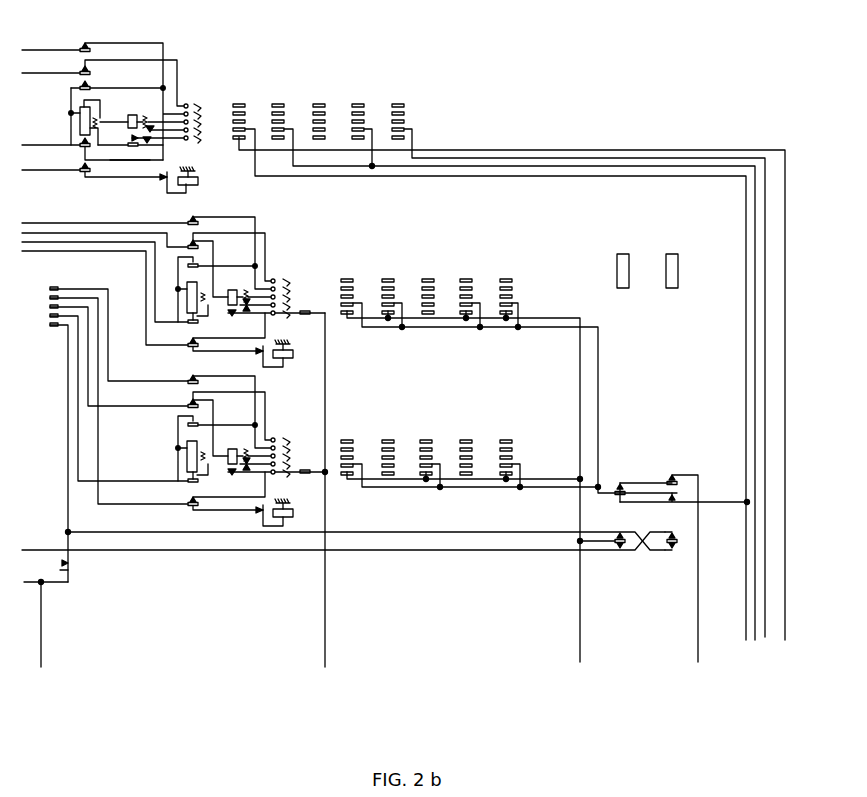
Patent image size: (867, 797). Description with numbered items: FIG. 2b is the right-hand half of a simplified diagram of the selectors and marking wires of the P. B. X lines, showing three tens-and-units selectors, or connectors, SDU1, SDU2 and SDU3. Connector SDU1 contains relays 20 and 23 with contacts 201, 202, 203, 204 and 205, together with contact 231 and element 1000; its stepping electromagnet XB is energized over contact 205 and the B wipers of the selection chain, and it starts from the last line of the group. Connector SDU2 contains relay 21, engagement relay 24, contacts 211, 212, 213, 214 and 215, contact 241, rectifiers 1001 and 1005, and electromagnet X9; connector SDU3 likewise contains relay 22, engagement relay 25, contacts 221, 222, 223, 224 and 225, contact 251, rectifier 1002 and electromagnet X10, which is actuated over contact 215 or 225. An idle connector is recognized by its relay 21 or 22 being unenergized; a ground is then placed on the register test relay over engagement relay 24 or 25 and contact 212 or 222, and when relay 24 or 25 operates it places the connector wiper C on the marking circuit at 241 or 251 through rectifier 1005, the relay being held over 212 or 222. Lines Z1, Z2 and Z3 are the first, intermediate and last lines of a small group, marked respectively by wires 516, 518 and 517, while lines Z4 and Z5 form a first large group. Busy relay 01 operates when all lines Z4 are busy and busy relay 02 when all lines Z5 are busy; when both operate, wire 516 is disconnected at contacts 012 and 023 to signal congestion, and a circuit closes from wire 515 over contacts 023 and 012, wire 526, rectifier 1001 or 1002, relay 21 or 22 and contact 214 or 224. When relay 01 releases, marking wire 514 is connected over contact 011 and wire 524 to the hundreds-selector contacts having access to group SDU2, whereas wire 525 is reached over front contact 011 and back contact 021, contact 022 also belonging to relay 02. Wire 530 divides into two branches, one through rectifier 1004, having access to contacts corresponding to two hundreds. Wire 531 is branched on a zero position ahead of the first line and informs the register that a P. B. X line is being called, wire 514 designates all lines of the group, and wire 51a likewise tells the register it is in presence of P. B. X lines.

The tens and units selector SDU1 is at (170, 80).
The tens and units selector SDU2 is at (267, 264).
The tens and units selector SDU3 is at (264, 423).
The relay 20 is at (73, 116).
The relay 21 is at (184, 289).
The relay 22 is at (180, 448).
The relay coil 23 is at (142, 113).
The engagement relay 24 is at (249, 288).
The engagement relay 25 is at (248, 447).
The contact 201 is at (103, 98).
The contact 202 is at (103, 82).
The contact 203 is at (102, 89).
The contact 204 is at (92, 152).
The contact 205 is at (94, 175).
The contact 211 is at (146, 248).
The contact 212 is at (146, 265).
The contact 213 is at (199, 264).
The contact 214 is at (110, 289).
The contact 215 is at (143, 306).
The contact 221 is at (160, 367).
The contact 222 is at (160, 380).
The contact 223 is at (188, 425).
The contact 224 is at (124, 408).
The contact 225 is at (157, 409).
The contact 231 is at (141, 150).
The contact 241 is at (240, 312).
The contact 251 is at (240, 483).
The contact 1000 is at (152, 147).
The rectifier 1001 is at (256, 318).
The rectifier 1002 is at (262, 474).
The rectifier 1004 is at (80, 452).
The rectifier 1005 is at (262, 315).
The stepping electromagnet XB is at (195, 180).
The electromagnet X9 is at (291, 353).
The electromagnet X10 is at (295, 512).
The first line Z1 is at (237, 113).
The intermediate lines Z2 is at (317, 113).
The last line Z3 is at (397, 113).
The lines of first large group Z4 is at (425, 287).
The lines of first large group Z5 is at (425, 444).
The busy relay 01 is at (623, 271).
The busy relay 02 is at (672, 271).
The contact 011 is at (606, 532).
The contact 012 is at (638, 485).
The contact 021 is at (675, 550).
The contact 022 is at (685, 506).
The contact 023 is at (678, 470).
The marking wire 514 is at (472, 501).
The wire 515 is at (693, 583).
The wire 516 is at (499, 396).
The wire 517 is at (534, 396).
The wire 518 is at (589, 409).
The wire 51a is at (522, 400).
The wire 524 is at (347, 548).
The wire 525 is at (369, 532).
The wire 526 is at (593, 492).
The wire 530 is at (46, 637).
The marking wire 531 is at (329, 503).